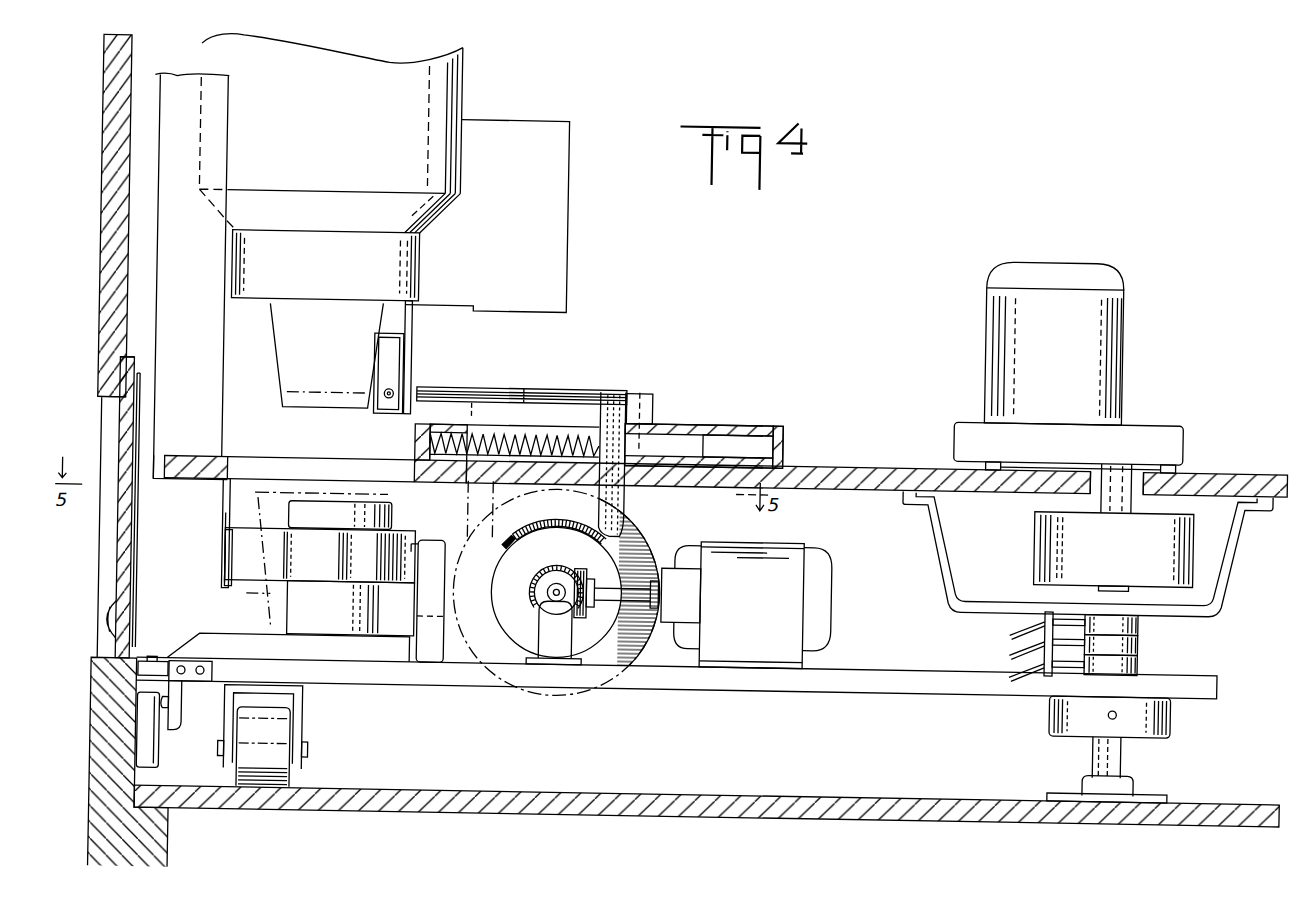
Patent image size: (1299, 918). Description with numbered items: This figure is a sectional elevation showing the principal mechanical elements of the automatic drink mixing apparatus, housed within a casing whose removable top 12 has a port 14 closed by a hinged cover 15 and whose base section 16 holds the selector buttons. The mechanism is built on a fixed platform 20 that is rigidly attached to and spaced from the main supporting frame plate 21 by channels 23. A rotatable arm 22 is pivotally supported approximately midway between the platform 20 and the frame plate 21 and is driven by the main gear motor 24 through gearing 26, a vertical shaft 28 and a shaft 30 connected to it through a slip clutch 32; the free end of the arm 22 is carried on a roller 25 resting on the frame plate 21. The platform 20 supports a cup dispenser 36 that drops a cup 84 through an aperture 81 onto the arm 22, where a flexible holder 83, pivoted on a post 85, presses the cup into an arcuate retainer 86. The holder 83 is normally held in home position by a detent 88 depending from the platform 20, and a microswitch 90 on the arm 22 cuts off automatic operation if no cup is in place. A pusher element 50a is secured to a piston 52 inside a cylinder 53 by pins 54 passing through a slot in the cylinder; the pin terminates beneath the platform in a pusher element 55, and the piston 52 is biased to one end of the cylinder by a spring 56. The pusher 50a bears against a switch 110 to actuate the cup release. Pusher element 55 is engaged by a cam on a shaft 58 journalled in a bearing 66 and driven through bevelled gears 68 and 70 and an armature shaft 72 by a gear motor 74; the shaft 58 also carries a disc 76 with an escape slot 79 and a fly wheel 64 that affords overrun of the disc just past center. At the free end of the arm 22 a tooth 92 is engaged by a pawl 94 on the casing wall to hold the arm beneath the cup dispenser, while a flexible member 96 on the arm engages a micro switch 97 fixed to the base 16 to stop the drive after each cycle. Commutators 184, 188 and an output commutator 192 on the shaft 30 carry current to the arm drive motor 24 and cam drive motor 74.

The removable top 12 is at (110, 181).
The port 14 is at (110, 408).
The hinged cover 15 is at (115, 561).
The base section 16 is at (103, 839).
The fixed platform 20 is at (850, 466).
The main supporting frame plate 21 is at (710, 804).
The rotatable arm 22 is at (872, 688).
The channels 23 is at (171, 83).
The main gear motor 24 is at (1056, 342).
The roller 25 is at (279, 743).
The gearing 26 is at (1147, 423).
The vertical shaft 28 is at (1106, 492).
The shaft 30 is at (1109, 739).
The slip clutch 32 is at (1046, 548).
The cup dispenser 36 is at (479, 88).
The pusher element 50a is at (488, 394).
The piston 52 is at (670, 445).
The cylinder 53 is at (737, 427).
The pins 54 is at (641, 393).
The pusher element 55 is at (622, 506).
The spring 56 is at (414, 443).
The shaft 58 is at (549, 597).
The fly wheel 64 is at (507, 569).
The bearing 66 is at (575, 630).
The bevelled gear 68 is at (553, 572).
The bevelled gear 70 is at (583, 571).
The armature shaft 72 is at (638, 603).
The gear motor 74 is at (758, 600).
The disc 76 is at (556, 529).
The escape slot 79 is at (540, 531).
The aperture 81 is at (232, 462).
The flexible holder 83 is at (334, 572).
The cup 84 is at (270, 330).
The post 85 is at (410, 649).
The arcuate retainer 86 is at (368, 520).
The detent 88 is at (222, 505).
The microswitch 90 is at (440, 545).
The tooth 92 is at (176, 668).
The pawl 94 is at (152, 667).
The flexible member 96 is at (184, 718).
The micro switch 97 is at (160, 754).
The switch 110 is at (395, 364).
The commutator 184 is at (1141, 657).
The commutator 188 is at (1141, 619).
The output commutator 192 is at (1141, 638).